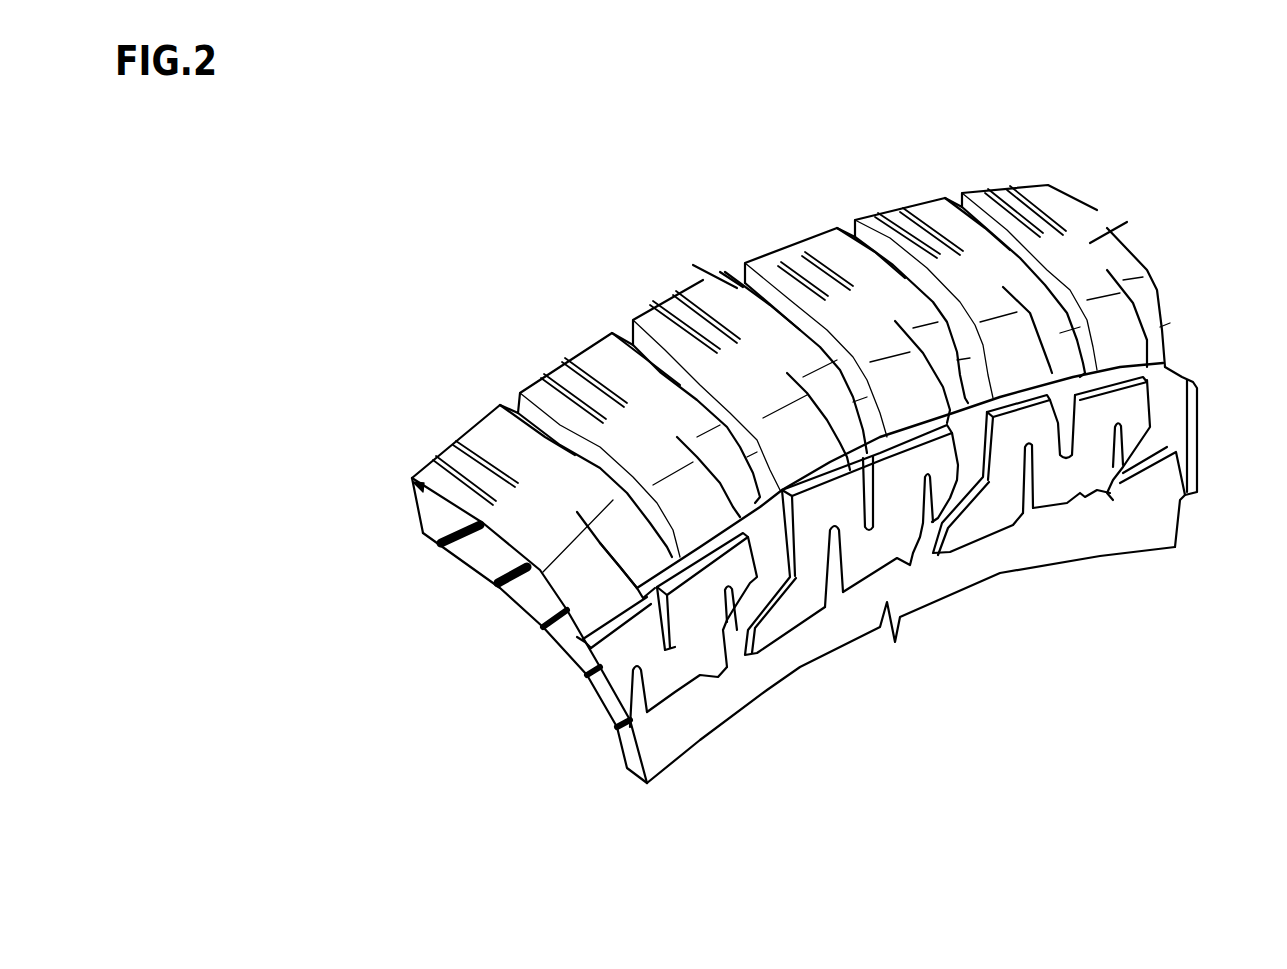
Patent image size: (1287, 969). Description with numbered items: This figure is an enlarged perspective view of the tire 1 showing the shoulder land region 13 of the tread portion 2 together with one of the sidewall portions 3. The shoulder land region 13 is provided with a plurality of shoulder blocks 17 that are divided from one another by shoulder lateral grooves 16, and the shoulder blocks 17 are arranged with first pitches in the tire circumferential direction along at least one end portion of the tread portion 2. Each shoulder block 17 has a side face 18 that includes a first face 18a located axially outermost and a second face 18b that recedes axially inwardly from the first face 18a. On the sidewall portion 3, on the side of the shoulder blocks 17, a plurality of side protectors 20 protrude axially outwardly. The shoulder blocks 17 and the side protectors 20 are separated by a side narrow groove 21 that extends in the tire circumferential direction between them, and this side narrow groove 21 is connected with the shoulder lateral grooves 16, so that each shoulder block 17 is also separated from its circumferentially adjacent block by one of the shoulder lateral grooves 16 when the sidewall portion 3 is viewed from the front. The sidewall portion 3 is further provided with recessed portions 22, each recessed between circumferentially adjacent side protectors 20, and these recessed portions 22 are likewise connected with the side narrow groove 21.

The pneumatic tire 1 is at (997, 167).
The tread portion 2 is at (463, 413).
The sidewall portion 3 is at (1123, 520).
The shoulder land region 13 is at (523, 527).
The shoulder lateral groove 16 is at (708, 392).
The shoulder block 17 is at (637, 423).
The side face 18 is at (715, 723).
The first face 18a is at (598, 589).
The second face 18b is at (627, 553).
The side protector 20 is at (1053, 480).
The side narrow groove 21 is at (1123, 380).
The recessed portion 22 is at (968, 450).